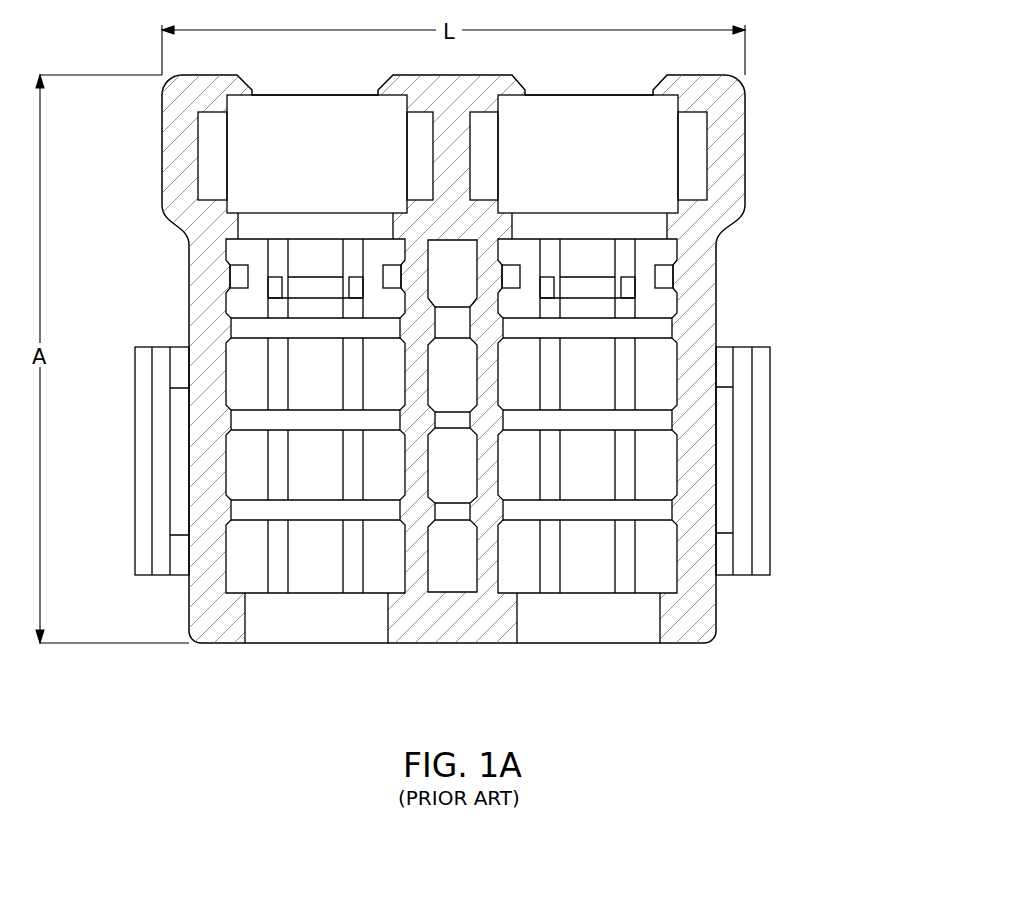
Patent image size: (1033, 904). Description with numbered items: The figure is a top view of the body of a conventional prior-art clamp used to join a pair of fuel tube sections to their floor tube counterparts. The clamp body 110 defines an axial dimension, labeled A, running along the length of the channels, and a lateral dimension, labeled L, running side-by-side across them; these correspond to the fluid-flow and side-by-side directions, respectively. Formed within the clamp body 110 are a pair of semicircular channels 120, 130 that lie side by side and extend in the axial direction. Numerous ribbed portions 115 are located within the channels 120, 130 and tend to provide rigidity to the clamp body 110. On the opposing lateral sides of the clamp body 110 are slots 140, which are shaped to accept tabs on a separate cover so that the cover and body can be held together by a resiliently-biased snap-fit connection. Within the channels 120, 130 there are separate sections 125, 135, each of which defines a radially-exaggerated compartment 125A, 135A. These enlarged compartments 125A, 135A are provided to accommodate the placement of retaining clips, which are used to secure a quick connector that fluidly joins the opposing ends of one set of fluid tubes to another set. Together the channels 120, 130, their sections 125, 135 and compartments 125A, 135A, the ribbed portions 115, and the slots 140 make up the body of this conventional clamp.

The clamp body 110 is at (716, 268).
The ribbed portions 115 is at (660, 421).
The channel 120 is at (313, 652).
The section 125 is at (326, 186).
The radially-exaggerated compartment 125A is at (221, 152).
The channel 130 is at (600, 652).
The section 135 is at (600, 186).
The radially-exaggerated compartment 135A is at (474, 142).
The slots 140 is at (762, 475).